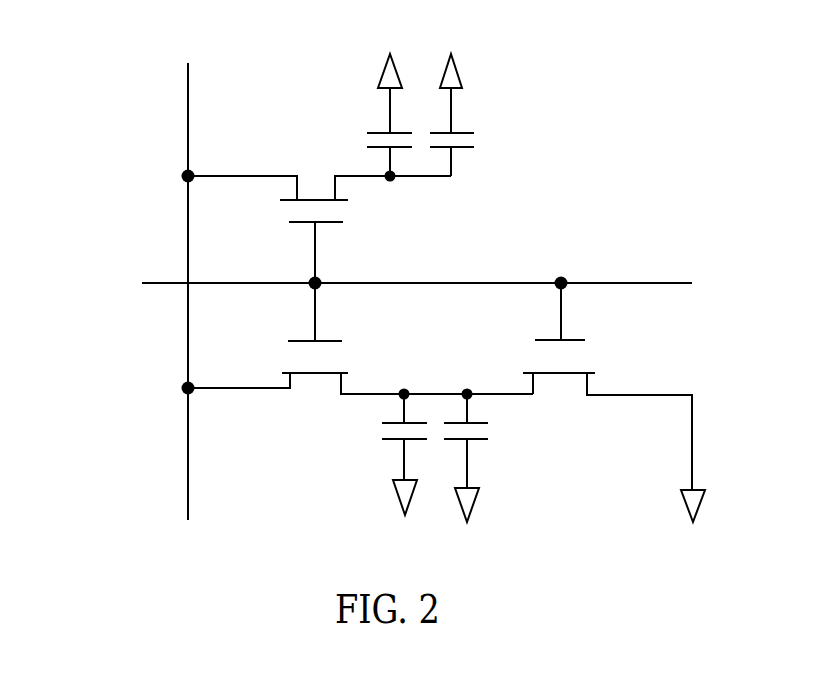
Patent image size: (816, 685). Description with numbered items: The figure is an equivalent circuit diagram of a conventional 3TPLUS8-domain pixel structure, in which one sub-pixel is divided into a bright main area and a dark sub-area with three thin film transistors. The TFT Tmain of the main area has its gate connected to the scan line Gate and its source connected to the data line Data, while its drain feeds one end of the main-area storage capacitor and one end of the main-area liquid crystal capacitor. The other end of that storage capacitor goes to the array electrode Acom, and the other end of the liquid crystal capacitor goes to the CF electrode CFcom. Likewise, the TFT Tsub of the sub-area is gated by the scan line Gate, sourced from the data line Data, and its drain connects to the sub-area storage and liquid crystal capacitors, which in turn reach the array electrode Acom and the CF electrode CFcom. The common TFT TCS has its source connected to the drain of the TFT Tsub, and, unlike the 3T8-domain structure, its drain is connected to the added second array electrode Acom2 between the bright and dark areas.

The data line Data is at (183, 274).
The scan line Gate is at (376, 280).
The TFT in the main area Tmain is at (319, 229).
The TFT in the sub-area Tsub is at (360, 338).
The common TFT TCS is at (607, 386).
The array electrode Acom is at (378, 279).
The CF electrode CFcom is at (481, 283).
The second array electrode Acom2 is at (699, 519).